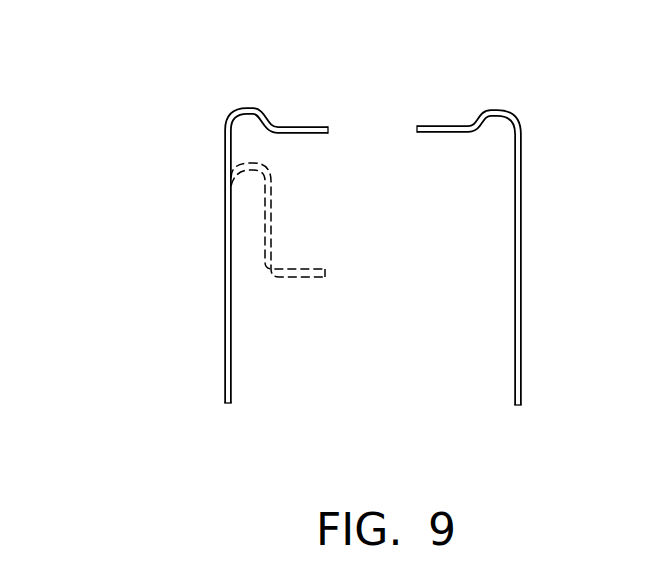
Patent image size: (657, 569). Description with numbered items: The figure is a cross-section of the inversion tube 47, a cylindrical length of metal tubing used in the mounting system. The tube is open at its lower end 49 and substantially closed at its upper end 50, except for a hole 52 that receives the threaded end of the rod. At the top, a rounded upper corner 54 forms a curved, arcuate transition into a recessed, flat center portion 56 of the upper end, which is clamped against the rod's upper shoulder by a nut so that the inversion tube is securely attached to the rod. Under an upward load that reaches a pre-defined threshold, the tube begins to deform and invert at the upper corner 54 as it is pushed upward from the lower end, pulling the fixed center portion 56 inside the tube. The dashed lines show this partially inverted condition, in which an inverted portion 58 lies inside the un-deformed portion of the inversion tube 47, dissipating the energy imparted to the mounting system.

The inversion tube 47 is at (145, 284).
The lower end 49 is at (207, 413).
The upper end 50 is at (183, 240).
The hole 52 is at (368, 88).
The upper corner 54 is at (502, 109).
The center portion 56 is at (305, 126).
The inverted portion 58 is at (271, 243).